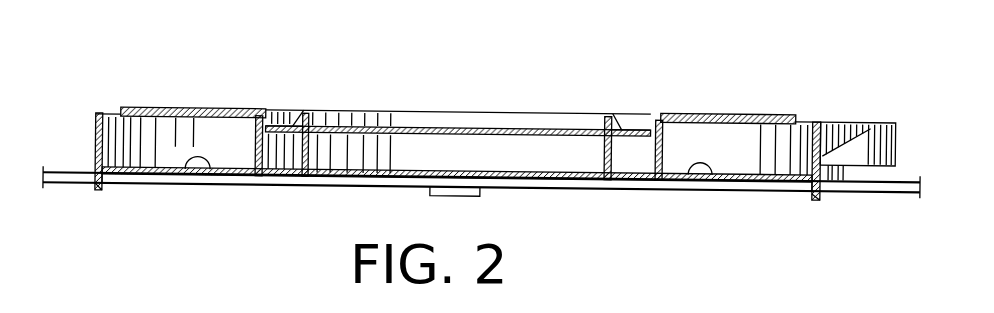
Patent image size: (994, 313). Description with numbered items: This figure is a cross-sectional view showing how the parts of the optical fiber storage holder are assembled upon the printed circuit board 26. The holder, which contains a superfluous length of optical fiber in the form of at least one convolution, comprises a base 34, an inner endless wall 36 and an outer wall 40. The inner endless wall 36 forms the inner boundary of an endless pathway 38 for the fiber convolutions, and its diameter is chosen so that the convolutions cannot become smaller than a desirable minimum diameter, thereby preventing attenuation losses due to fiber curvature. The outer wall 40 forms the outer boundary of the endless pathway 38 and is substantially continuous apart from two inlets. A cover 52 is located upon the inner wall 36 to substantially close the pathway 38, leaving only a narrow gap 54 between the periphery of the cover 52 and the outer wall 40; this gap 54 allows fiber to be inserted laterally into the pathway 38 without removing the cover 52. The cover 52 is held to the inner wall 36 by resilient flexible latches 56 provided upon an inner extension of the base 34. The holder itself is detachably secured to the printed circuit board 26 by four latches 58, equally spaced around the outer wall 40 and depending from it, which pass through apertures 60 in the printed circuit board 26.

The printed circuit board 26 is at (233, 188).
The base 34 is at (188, 172).
The inner endless wall 36 is at (254, 137).
The endless pathway 38 is at (180, 140).
The outer wall 40 is at (96, 148).
The cover 52 is at (217, 110).
The narrow gap 54 is at (112, 115).
The resilient flexible latches 56 is at (322, 110).
The latches 58 is at (97, 192).
The apertures 60 is at (106, 190).